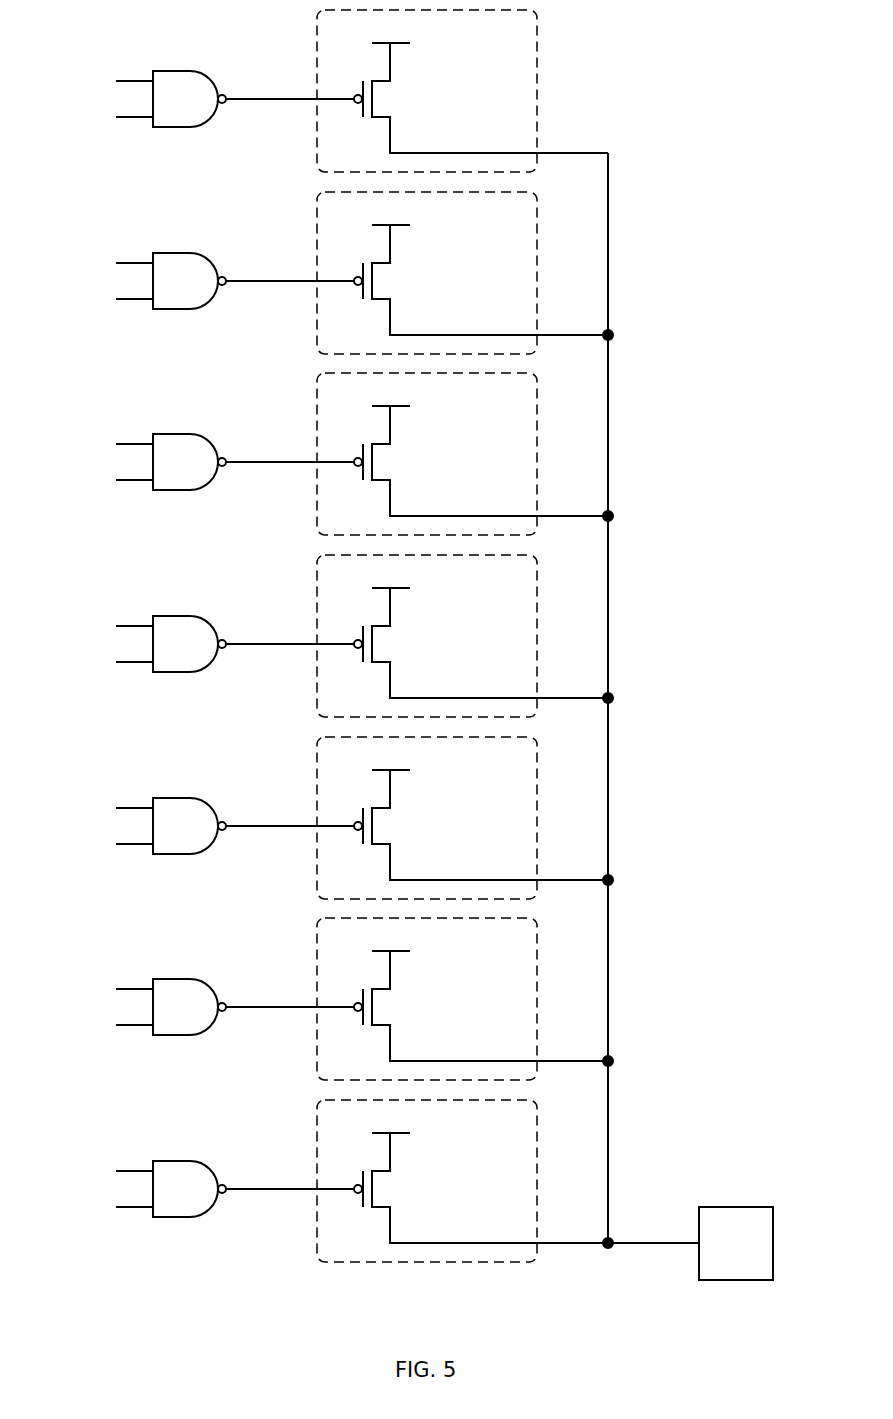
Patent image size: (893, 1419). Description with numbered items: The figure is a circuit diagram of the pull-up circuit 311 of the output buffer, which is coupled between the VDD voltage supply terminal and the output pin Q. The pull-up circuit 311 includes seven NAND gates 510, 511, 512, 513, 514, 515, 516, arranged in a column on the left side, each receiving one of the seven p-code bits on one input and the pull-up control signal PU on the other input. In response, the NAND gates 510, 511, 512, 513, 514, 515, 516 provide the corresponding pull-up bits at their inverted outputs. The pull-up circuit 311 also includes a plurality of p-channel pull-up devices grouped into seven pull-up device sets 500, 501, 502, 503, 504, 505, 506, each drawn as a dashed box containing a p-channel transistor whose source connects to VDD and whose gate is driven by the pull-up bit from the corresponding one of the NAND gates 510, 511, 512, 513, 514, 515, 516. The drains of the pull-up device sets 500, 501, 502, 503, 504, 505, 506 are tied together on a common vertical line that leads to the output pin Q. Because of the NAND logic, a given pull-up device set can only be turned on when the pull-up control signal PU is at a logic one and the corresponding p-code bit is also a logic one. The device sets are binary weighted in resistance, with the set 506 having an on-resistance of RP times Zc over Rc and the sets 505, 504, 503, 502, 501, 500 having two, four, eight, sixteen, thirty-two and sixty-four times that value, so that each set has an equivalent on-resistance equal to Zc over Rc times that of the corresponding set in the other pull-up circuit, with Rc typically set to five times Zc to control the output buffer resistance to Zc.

The pull-up circuit 311 is at (660, 98).
The pull-up device set 500 is at (465, 1181).
The pull-up device set 501 is at (465, 999).
The pull-up device set 502 is at (465, 818).
The pull-up device set 503 is at (465, 636).
The pull-up device set 504 is at (465, 454).
The pull-up device set 505 is at (465, 273).
The pull-up device set 506 is at (537, 80).
The NAND gate 510 is at (208, 1166).
The NAND gate 511 is at (208, 984).
The NAND gate 512 is at (208, 803).
The NAND gate 513 is at (208, 621).
The NAND gate 514 is at (208, 439).
The NAND gate 515 is at (208, 258).
The NAND gate 516 is at (180, 68).